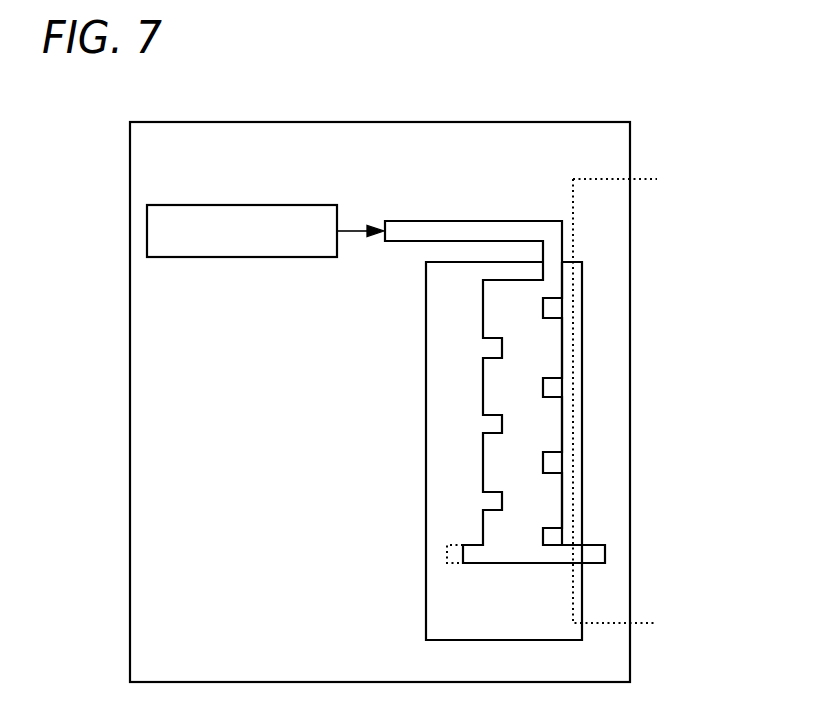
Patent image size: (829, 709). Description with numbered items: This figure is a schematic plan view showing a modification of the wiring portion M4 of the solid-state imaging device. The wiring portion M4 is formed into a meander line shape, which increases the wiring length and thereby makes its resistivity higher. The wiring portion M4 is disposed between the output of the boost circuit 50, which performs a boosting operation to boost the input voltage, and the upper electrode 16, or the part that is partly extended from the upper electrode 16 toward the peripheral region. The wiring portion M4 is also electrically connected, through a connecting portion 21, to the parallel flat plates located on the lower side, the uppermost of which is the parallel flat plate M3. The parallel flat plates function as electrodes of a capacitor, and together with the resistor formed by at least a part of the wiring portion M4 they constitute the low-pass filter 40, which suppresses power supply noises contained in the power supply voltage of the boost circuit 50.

The boost circuit 50 is at (277, 192).
The low-pass filter 40 is at (500, 316).
The upper electrode 16 is at (622, 178).
The connecting portion 21 is at (455, 555).
The wiring portion M4 is at (497, 221).
The parallel flat plate M3 is at (445, 425).